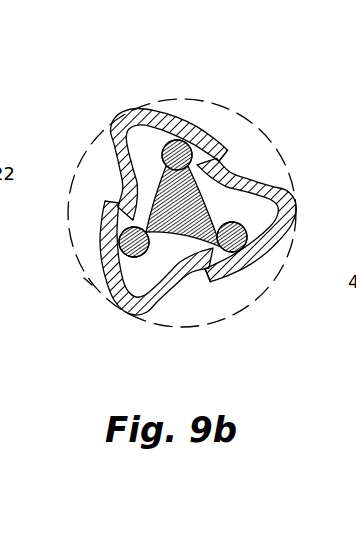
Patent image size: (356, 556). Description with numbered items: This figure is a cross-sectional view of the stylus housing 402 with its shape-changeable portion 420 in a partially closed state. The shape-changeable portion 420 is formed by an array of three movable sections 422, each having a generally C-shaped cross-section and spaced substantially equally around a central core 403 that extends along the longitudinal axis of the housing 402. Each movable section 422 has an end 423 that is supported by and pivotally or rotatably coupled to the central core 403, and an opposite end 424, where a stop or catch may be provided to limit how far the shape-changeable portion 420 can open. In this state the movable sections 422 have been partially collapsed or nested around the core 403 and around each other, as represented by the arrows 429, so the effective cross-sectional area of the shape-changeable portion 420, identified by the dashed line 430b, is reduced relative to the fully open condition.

The housing 402 is at (156, 75).
The central core 403 is at (172, 232).
The shape-changeable portion 420 is at (229, 125).
The movable sections 422 is at (123, 121).
The end 423 is at (193, 157).
The end 424 is at (210, 276).
The arrows 429 is at (97, 112).
The dashed line 430b is at (88, 281).